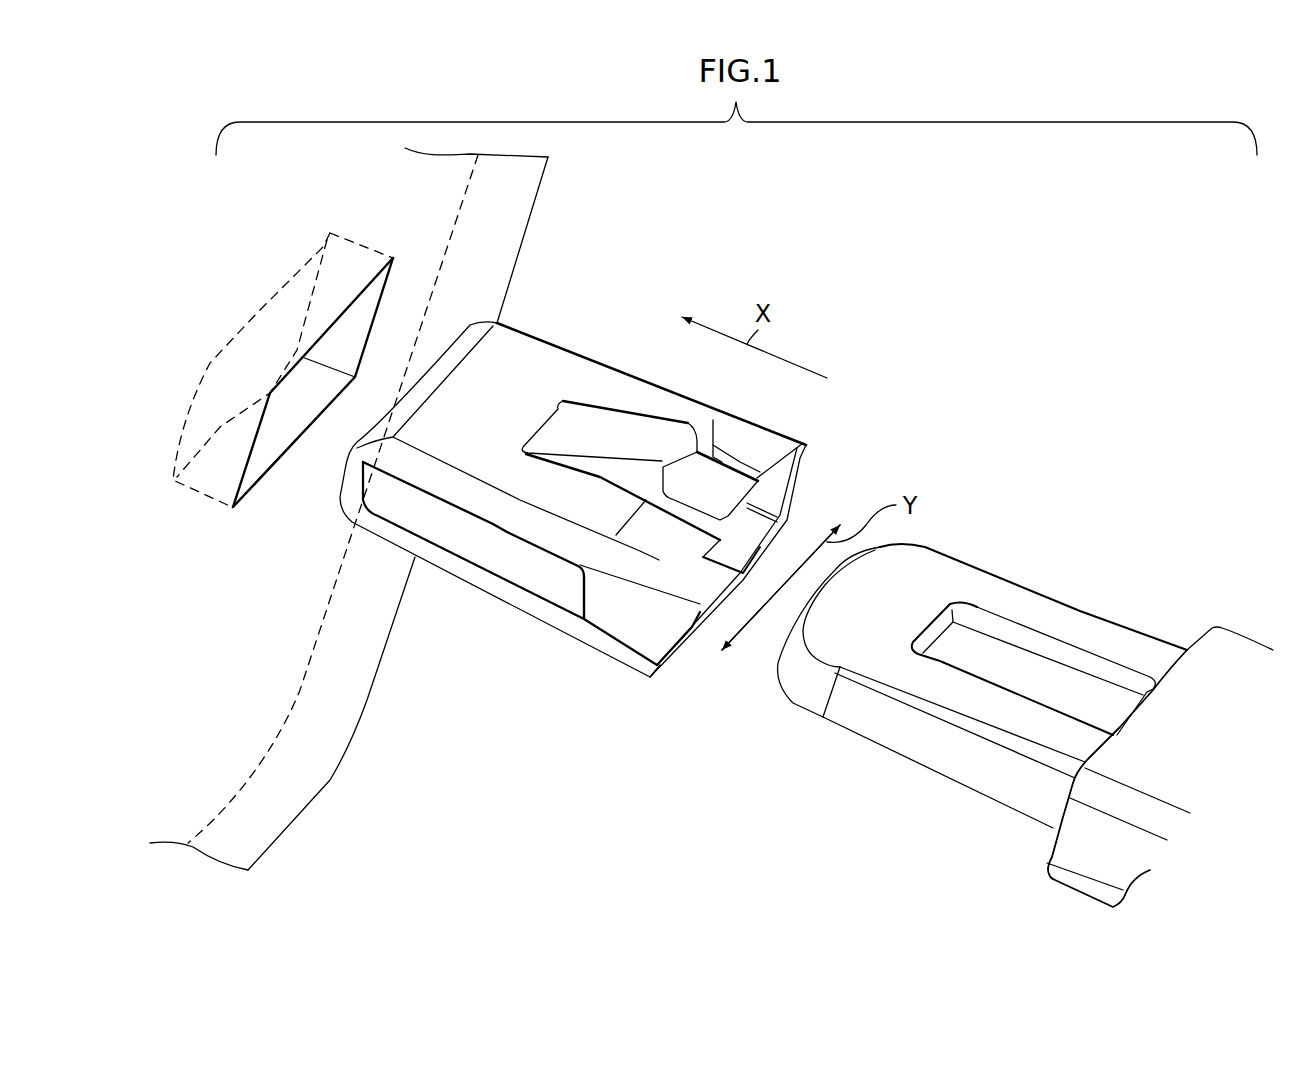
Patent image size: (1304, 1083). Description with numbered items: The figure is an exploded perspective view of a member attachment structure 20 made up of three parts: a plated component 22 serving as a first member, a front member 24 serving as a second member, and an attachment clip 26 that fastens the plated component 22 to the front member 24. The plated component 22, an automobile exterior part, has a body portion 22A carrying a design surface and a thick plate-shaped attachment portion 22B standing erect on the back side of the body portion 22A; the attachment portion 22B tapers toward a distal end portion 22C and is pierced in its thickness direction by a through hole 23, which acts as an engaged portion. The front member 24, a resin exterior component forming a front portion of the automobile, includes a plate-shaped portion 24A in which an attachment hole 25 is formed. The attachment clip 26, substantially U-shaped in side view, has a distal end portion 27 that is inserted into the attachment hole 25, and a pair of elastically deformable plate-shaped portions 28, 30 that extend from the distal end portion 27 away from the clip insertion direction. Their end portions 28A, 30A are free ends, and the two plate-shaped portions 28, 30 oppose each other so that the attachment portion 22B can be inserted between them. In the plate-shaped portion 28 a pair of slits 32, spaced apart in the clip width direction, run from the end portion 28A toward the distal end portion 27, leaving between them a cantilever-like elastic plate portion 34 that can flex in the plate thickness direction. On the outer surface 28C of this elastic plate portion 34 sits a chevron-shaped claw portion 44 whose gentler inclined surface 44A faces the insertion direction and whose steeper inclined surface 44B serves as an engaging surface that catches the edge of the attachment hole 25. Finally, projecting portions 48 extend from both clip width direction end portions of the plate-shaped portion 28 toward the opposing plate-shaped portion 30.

The member attachment structure 20 is at (901, 318).
The plated component 22 is at (1219, 614).
The body portion 22A is at (1247, 637).
The attachment portion 22B is at (1033, 588).
The distal end portion 22C is at (818, 633).
The through hole 23 is at (993, 662).
The front member 24 is at (540, 210).
The plate-shaped portion 24A is at (505, 243).
The attachment hole 25 is at (347, 315).
The attachment clip 26 is at (507, 631).
The distal end portion 27 is at (338, 475).
The plate-shaped portion 28 is at (535, 377).
The end portion 28A is at (790, 482).
The outer surface 28C is at (600, 382).
The plate-shaped portion 30 is at (590, 650).
The end portion 30A is at (665, 653).
The slits 32 is at (722, 460).
The elastic plate portion 34 is at (741, 465).
The claw portion 44 is at (691, 420).
The inclined surface 44A is at (632, 442).
The inclined surface 44B is at (680, 468).
The projecting portions 48 is at (785, 513).